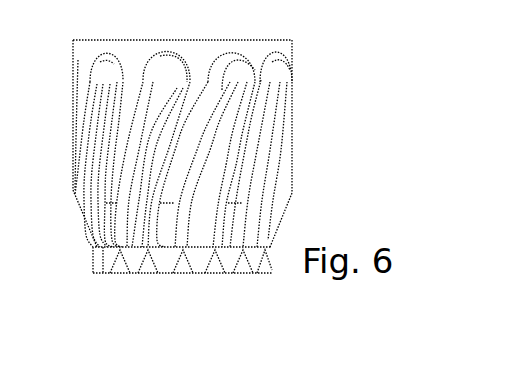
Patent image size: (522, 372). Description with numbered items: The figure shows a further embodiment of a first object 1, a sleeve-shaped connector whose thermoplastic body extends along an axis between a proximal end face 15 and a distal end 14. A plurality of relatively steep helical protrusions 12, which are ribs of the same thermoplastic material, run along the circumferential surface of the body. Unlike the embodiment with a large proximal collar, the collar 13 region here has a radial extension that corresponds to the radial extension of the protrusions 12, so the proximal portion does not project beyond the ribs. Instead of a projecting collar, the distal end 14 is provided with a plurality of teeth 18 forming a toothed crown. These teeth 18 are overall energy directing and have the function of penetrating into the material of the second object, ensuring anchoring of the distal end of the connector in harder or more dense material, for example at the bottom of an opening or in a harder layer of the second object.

The first object 1 is at (320, 149).
The helical protrusions 12 is at (218, 135).
The proximal collar 13 is at (177, 48).
The distal end 14 is at (137, 275).
The proximal end face 15 is at (243, 40).
The teeth 18 is at (197, 263).